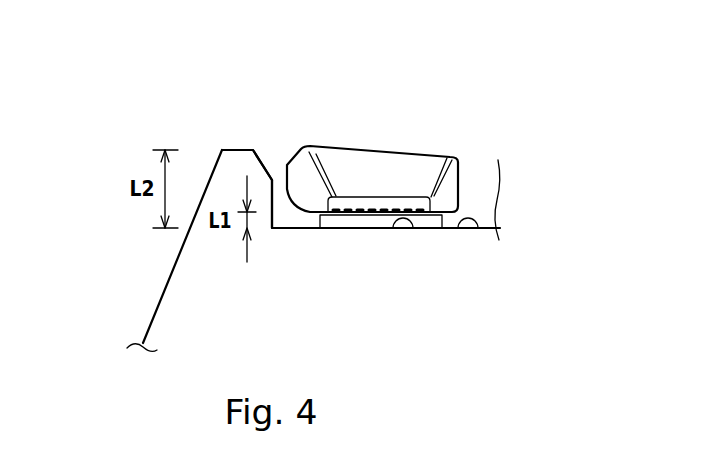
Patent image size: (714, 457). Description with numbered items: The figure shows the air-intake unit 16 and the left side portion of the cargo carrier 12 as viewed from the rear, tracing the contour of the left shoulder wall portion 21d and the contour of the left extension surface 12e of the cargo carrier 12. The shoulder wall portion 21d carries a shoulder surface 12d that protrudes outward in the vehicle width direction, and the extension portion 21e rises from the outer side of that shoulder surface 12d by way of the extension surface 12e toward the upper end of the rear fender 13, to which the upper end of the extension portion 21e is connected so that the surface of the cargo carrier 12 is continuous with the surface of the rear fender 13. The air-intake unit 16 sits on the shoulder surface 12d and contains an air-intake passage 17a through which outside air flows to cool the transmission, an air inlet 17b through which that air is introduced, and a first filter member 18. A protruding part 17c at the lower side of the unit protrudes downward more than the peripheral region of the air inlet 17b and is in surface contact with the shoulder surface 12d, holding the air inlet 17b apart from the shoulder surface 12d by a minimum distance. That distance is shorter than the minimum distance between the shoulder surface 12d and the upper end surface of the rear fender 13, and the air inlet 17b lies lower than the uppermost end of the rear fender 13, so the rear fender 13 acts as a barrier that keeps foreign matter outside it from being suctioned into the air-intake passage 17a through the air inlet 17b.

The cargo carrier 12 is at (285, 97).
The extension surface 12e is at (280, 182).
The shoulder surface 12d is at (413, 229).
The rear fender 13 is at (156, 300).
The air-intake unit 16 is at (419, 162).
The air-intake passage 17a is at (388, 165).
The air inlet 17b is at (368, 212).
The protruding part 17c is at (330, 229).
The first filter member 18 is at (347, 229).
The extension portion 21e is at (264, 155).
The shoulder wall portion 21d is at (480, 229).